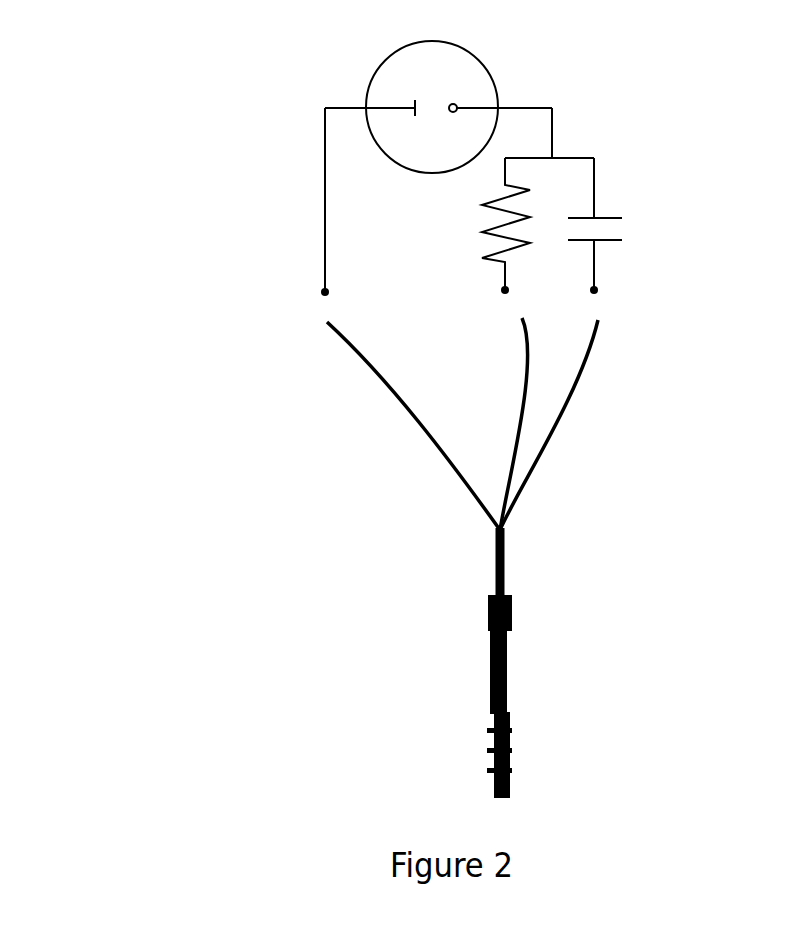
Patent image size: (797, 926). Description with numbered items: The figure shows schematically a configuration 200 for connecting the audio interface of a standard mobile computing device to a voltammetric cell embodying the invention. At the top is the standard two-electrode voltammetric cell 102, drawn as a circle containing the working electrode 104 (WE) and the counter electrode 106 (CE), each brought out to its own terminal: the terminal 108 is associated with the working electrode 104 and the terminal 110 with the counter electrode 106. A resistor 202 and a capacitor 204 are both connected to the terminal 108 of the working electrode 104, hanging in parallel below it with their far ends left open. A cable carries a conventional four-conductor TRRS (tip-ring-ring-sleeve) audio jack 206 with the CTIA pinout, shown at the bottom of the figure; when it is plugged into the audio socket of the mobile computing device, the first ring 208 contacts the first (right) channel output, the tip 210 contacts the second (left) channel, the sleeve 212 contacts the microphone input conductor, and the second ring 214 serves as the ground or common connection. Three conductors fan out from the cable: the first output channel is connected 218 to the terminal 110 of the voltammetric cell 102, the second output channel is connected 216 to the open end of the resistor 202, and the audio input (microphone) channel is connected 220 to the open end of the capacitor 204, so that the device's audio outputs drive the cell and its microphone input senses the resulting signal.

The configuration 200 is at (118, 201).
The voltammetric cell 102 is at (458, 46).
The working electrode 104 is at (496, 107).
The counter electrode 106 is at (370, 98).
The terminal 108 is at (553, 108).
The terminal 110 is at (321, 290).
The resistor 202 is at (484, 248).
The capacitor 204 is at (632, 223).
The audio jack 206 is at (470, 663).
The first ring 208 is at (494, 760).
The tip 210 is at (494, 787).
The sleeve 212 is at (494, 718).
The second ring 214 is at (494, 739).
The second output channel connection 216 is at (532, 343).
The first output channel connection 218 is at (338, 350).
The audio input channel connection 220 is at (597, 325).